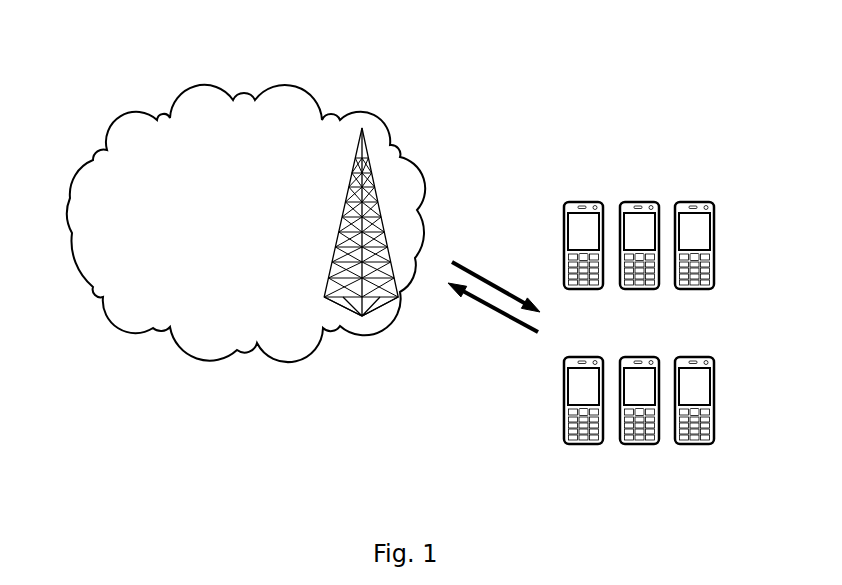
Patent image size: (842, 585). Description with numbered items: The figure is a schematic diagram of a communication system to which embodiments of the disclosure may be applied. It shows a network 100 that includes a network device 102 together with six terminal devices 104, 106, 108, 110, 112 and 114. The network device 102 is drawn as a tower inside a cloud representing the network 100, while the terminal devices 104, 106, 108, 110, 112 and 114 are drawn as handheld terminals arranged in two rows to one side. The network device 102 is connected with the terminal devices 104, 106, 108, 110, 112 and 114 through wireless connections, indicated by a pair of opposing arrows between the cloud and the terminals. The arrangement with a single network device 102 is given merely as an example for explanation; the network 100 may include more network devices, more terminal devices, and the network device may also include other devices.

The network 100 is at (238, 72).
The network device 102 is at (326, 286).
The terminal device 104 is at (583, 201).
The terminal device 106 is at (640, 201).
The terminal device 108 is at (698, 201).
The terminal device 110 is at (583, 444).
The terminal device 112 is at (640, 444).
The terminal device 114 is at (698, 444).